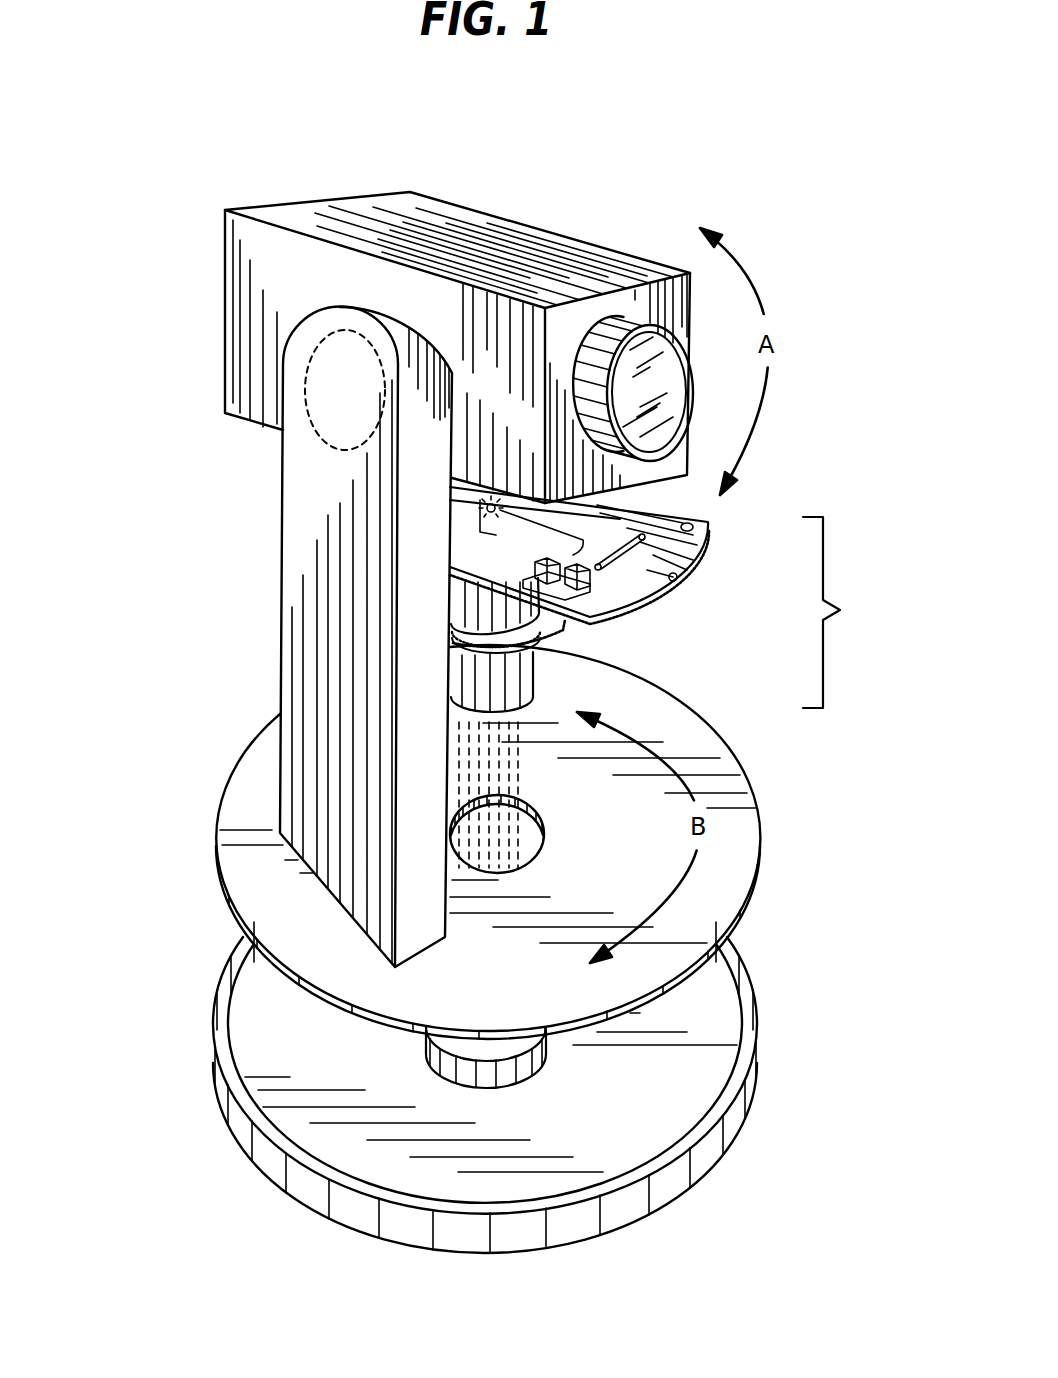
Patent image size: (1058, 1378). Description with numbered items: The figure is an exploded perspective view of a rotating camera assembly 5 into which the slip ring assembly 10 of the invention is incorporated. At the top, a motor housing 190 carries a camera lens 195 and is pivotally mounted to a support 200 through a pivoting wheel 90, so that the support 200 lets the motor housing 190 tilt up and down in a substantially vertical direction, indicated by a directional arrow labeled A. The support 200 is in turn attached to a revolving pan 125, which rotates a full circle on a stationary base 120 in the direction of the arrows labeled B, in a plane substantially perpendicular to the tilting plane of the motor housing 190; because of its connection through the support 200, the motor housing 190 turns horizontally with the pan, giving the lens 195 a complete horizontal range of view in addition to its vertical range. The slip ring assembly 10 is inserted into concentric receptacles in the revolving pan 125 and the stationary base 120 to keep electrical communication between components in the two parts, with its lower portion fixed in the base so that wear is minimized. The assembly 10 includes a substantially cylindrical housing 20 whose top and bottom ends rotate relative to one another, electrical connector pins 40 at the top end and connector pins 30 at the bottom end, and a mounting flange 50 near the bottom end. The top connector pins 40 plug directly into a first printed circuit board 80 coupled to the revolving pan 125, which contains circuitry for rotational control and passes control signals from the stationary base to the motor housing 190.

The rotating camera assembly 5 is at (158, 697).
The slip ring assembly 10 is at (841, 612).
The substantially cylindrical housing 20 is at (550, 645).
The electrical connector pins 30 is at (712, 808).
The electrical connector pins 40 is at (675, 503).
The mounting flange 50 is at (465, 661).
The first printed circuit board 80 is at (625, 566).
The pivoting wheel 90 is at (333, 393).
The stationary base 120 is at (690, 1168).
The revolving pan 125 is at (700, 887).
The motor housing 190 is at (410, 223).
The camera lens 195 is at (643, 347).
The support 200 is at (277, 700).